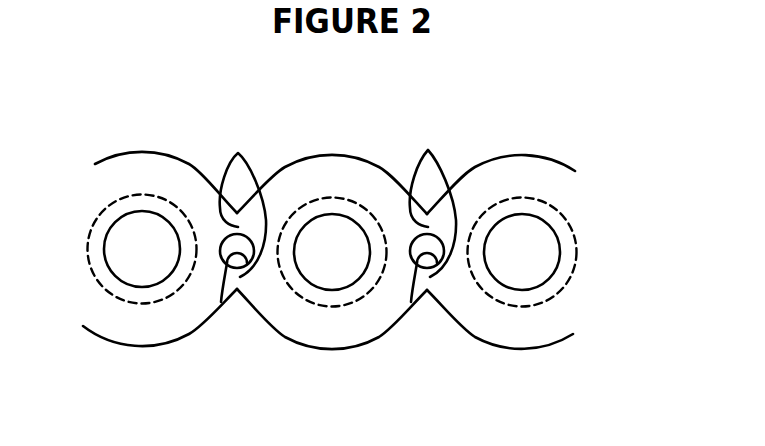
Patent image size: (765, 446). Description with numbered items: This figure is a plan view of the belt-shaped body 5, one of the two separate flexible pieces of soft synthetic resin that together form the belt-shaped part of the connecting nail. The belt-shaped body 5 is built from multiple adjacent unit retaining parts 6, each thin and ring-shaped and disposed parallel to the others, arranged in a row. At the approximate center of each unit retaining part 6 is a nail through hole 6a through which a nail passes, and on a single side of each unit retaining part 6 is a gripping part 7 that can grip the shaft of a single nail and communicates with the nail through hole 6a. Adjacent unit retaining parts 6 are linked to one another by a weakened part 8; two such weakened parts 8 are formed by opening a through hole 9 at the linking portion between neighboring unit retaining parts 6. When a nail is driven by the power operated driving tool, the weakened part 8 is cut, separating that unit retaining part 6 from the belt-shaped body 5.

The belt-shaped body 5 is at (490, 116).
The unit retaining part 6 is at (138, 178).
The nail through hole 6a is at (110, 268).
The gripping part 7 is at (152, 297).
The weakened part 8 is at (243, 153).
The through hole 9 is at (236, 294).